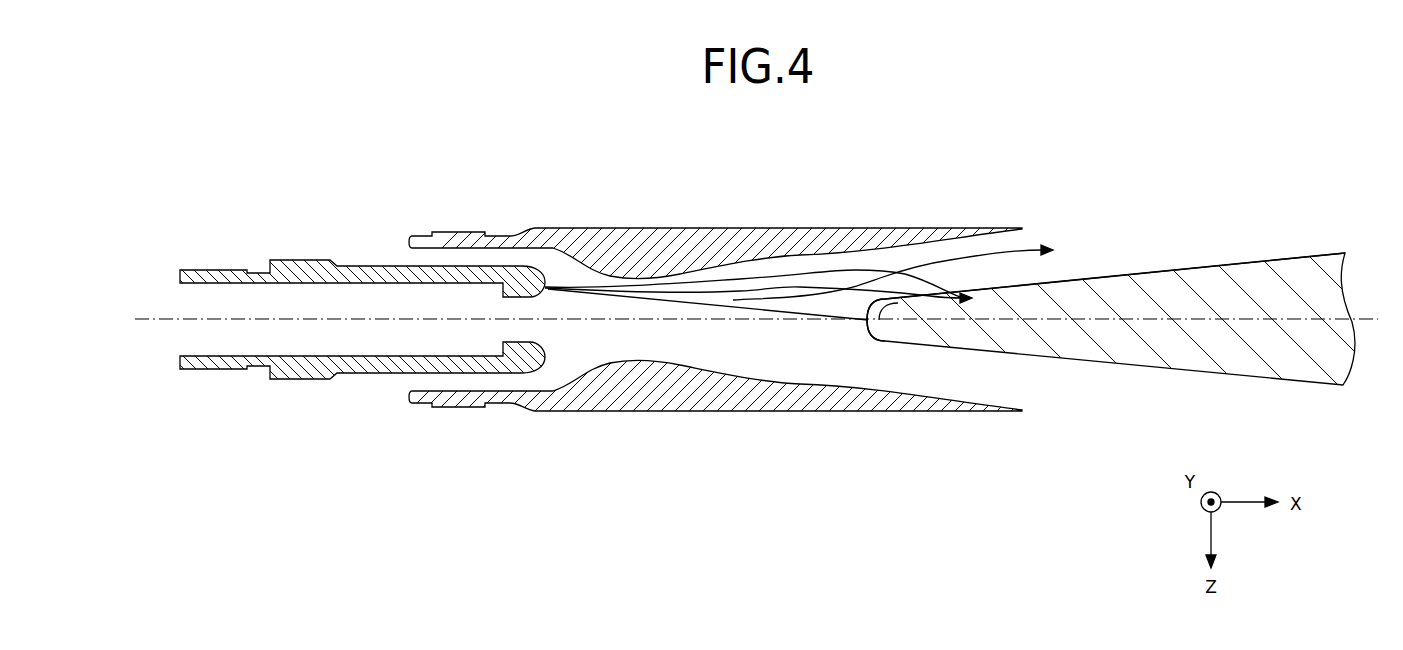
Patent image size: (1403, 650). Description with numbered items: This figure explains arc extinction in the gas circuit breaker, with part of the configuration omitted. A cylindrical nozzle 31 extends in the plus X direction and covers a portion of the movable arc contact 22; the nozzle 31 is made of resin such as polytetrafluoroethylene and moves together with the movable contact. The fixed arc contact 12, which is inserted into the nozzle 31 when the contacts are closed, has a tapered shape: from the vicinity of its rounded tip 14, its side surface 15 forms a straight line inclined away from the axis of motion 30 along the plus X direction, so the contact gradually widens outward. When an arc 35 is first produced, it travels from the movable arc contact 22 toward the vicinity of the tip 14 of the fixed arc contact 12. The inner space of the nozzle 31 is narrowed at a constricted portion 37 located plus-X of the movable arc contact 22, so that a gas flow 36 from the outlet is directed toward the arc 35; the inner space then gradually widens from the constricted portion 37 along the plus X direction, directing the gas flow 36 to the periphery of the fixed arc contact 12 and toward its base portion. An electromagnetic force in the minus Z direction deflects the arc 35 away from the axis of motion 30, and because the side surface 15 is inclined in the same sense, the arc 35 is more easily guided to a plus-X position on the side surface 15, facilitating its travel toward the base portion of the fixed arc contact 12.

The axis of motion 30 is at (145, 318).
The movable arc contact 22 is at (382, 263).
The nozzle 31 is at (713, 235).
The constricted portion 37 is at (617, 362).
The arc 35 is at (563, 288).
The gas flow 36 is at (1030, 247).
The fixed arc contact 12 is at (1302, 255).
The side surface 15 is at (1167, 268).
The tip 14 is at (866, 322).